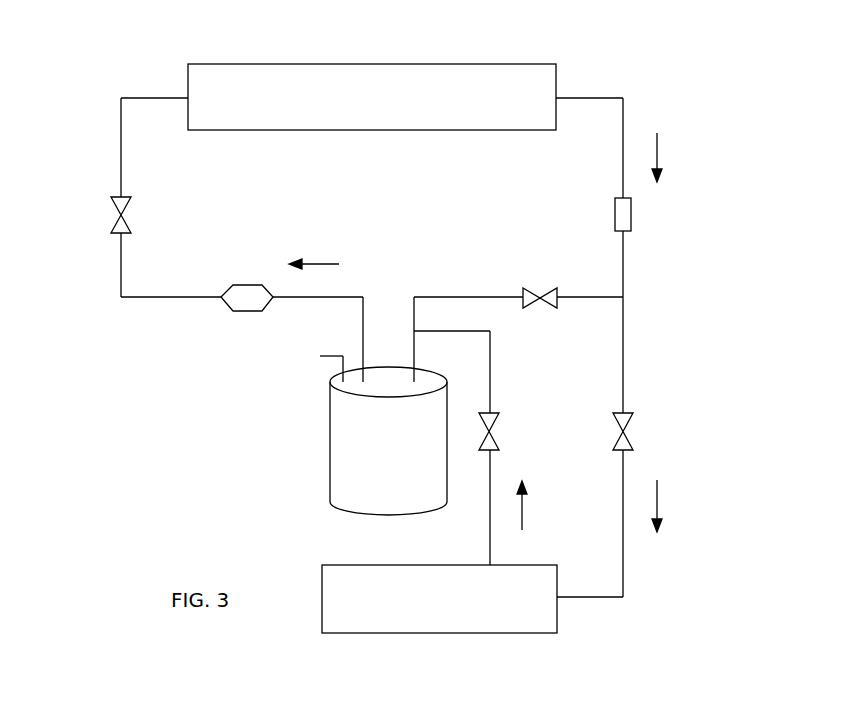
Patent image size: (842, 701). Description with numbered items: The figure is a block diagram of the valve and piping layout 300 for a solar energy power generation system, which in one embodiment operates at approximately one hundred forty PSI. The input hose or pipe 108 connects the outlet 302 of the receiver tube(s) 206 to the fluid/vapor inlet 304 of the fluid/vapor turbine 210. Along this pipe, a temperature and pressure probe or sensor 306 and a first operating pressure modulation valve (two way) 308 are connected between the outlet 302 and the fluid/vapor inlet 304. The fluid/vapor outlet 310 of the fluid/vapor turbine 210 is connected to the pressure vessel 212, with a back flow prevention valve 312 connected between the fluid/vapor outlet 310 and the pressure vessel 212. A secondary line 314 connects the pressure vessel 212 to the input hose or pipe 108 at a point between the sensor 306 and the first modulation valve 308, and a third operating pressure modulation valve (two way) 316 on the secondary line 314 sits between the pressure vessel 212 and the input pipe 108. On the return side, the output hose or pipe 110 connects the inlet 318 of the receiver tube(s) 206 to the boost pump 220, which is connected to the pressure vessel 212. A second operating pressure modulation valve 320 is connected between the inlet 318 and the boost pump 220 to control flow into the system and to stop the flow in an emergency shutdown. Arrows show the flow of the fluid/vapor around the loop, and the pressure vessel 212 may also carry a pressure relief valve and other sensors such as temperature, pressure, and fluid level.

The valve and piping layout 300 is at (672, 39).
The receiver tube(s) 206 is at (222, 73).
The inlet of the receiver tube(s) 318 is at (188, 95).
The output hose or pipe 110 is at (120, 125).
The second operating pressure modulation valve 320 is at (116, 197).
The boost pump 220 is at (247, 293).
The secondary line 314 is at (439, 297).
The third operating pressure modulation valve (2 way) 316 is at (524, 290).
The outlet of the receiver tube(s) 302 is at (557, 93).
The input hose or pipe 108 is at (624, 125).
The temperature and pressure probe or sensor 306 is at (632, 212).
The first operating pressure modulation valve (2 way) 308 is at (632, 415).
The back flow prevention valve 312 is at (497, 415).
The fluid/vapor outlet 310 is at (333, 355).
The pressure vessel 212 is at (339, 473).
The fluid/vapor turbine 210 is at (357, 575).
The fluid/vapor inlet 304 is at (558, 598).